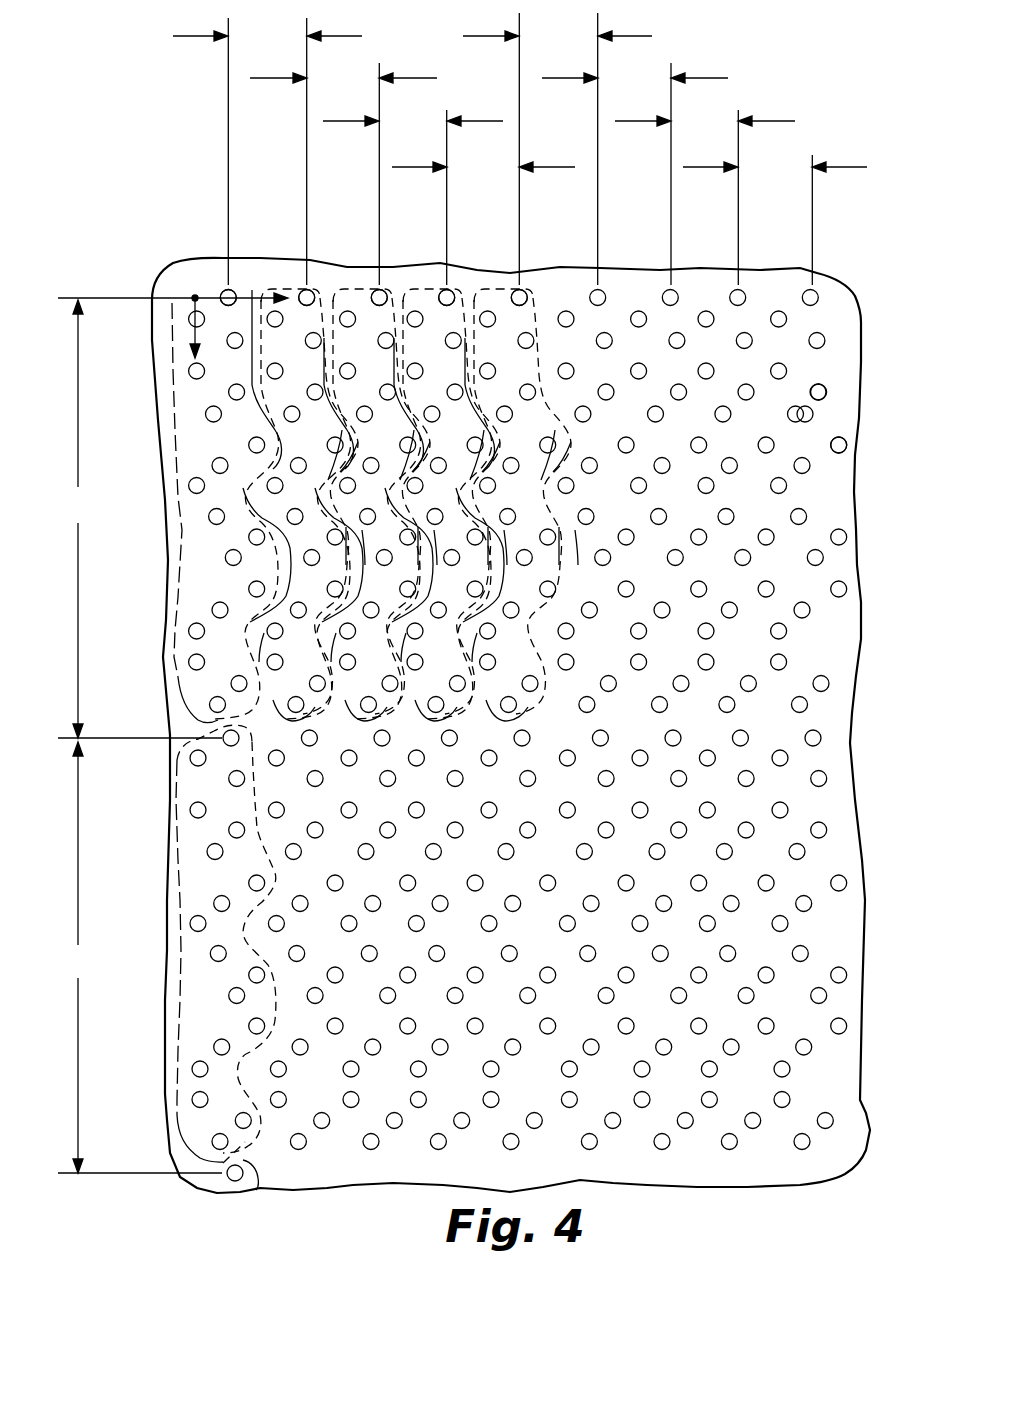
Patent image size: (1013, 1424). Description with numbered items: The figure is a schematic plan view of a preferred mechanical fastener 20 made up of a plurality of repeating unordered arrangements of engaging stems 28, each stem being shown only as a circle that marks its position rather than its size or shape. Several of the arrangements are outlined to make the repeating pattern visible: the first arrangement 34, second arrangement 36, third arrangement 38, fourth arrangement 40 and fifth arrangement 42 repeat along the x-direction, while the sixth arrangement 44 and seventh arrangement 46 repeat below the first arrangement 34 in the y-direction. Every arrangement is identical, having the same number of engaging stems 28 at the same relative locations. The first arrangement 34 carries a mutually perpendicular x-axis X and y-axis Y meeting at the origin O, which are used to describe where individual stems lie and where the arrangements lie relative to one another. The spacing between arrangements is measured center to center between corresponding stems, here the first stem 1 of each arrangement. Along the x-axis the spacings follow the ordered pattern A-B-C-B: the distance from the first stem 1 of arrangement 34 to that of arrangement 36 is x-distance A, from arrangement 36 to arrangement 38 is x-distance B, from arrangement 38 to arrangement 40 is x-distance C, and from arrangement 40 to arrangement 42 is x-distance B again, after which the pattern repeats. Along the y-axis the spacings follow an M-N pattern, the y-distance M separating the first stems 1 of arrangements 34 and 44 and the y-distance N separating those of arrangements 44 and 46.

The first stem 1 is at (235, 290).
The mechanical fastener 20 is at (850, 277).
The engaging stems 28 is at (813, 413).
The first arrangement 34 is at (180, 573).
The second arrangement 36 is at (287, 278).
The third arrangement 38 is at (355, 278).
The fourth arrangement 40 is at (417, 278).
The fifth arrangement 42 is at (497, 278).
The sixth arrangement 44 is at (182, 956).
The seventh arrangement 46 is at (262, 1180).
The origin O is at (192, 296).
The x-axis X is at (208, 294).
The y-axis Y is at (192, 335).
The y-distance M is at (140, 519).
The y-distance N is at (140, 957).
The x-distance A is at (412, 149).
The x-distance B is at (558, 174).
The x-distance C is at (559, 195).